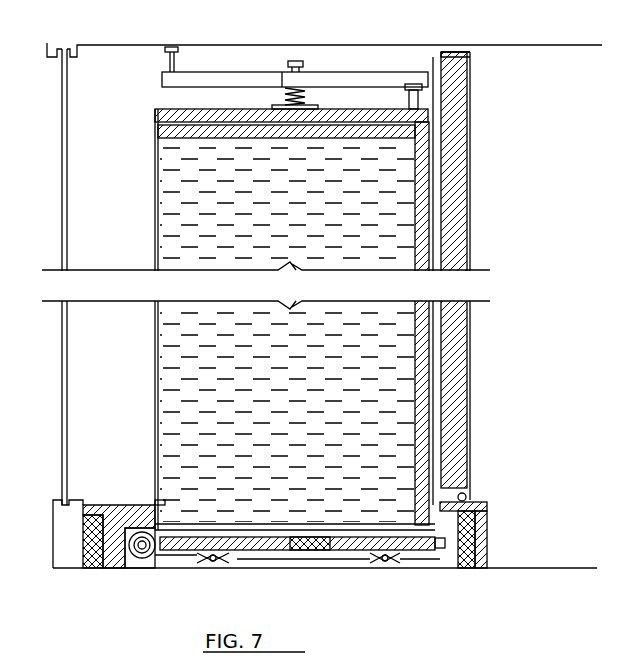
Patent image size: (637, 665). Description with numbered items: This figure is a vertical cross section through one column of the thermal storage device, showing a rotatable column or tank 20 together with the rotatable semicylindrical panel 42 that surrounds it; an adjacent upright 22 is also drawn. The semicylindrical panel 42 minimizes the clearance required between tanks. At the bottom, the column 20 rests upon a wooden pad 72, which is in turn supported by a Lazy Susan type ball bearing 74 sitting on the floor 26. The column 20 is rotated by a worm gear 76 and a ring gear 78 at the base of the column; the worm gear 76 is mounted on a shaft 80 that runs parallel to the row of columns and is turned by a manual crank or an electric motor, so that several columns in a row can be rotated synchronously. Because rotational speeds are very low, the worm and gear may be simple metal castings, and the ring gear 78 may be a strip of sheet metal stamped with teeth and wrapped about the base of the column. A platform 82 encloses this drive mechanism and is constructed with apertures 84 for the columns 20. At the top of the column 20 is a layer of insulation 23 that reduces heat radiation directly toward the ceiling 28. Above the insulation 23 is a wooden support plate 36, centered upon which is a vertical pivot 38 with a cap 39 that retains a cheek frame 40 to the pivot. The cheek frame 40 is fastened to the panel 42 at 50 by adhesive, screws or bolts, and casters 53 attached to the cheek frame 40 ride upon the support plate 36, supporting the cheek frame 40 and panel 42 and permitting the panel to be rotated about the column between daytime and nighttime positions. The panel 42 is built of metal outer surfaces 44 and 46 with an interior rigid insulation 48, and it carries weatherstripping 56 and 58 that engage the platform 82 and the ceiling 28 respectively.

The column 20 is at (157, 371).
The upright post 22 is at (62, 207).
The layer of insulation 23 is at (185, 133).
The floor 26 is at (524, 568).
The ceiling 28 is at (561, 46).
The wooden support plate 36 is at (165, 110).
The vertical pivot 38 is at (278, 105).
The cap 39 is at (296, 61).
The cheek frame 40 is at (335, 70).
The semicylindrical panel 42 is at (470, 173).
The metal outer surface 44 is at (468, 225).
The metal outer surface 46 is at (436, 338).
The interior rigid insulation 48 is at (455, 382).
The fastening location 50 is at (438, 70).
The caster 53 is at (420, 100).
The weatherstripping 56 is at (470, 497).
The weatherstripping 58 is at (470, 53).
The wooden pad 72 is at (290, 549).
The Lazy Susan type ball bearing 74 is at (240, 560).
The worm gear 76 is at (132, 556).
The ring gear 78 is at (447, 548).
The shaft 80 is at (143, 550).
The platform 82 is at (108, 507).
The aperture 84 is at (165, 505).